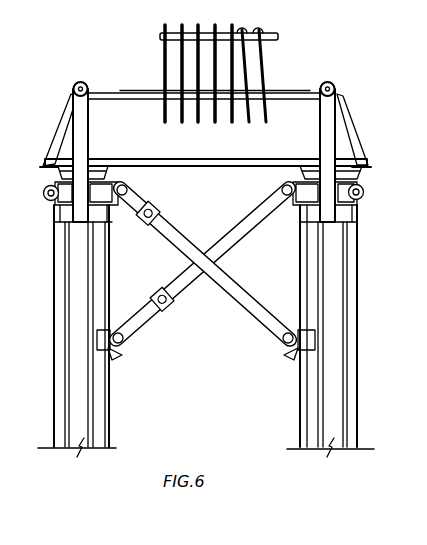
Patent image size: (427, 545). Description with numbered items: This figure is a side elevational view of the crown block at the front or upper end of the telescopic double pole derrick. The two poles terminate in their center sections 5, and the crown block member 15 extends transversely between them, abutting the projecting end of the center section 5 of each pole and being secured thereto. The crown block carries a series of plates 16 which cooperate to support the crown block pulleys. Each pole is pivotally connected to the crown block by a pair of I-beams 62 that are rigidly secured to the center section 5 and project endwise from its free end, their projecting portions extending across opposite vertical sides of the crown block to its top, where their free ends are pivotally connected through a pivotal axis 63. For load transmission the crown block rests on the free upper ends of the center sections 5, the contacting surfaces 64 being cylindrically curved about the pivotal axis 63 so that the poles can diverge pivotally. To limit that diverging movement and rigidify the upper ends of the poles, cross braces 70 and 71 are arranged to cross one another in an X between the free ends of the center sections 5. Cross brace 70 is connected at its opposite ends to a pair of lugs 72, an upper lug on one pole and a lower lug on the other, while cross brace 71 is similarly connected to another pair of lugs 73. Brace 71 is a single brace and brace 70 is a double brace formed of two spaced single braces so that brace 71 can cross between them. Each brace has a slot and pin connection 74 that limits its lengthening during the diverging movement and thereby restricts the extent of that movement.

The center section 5 is at (206, 340).
The crown block member 15 is at (191, 148).
The plates 16 is at (202, 122).
The I-beams 62 is at (82, 127).
The pivotal axis 63 is at (84, 84).
The contacting surfaces 64 is at (312, 164).
The cross brace 70 is at (175, 246).
The cross brace 71 is at (227, 248).
The lugs 72 is at (124, 188).
The lugs 73 is at (284, 190).
The slot and pin connection 74 is at (162, 217).